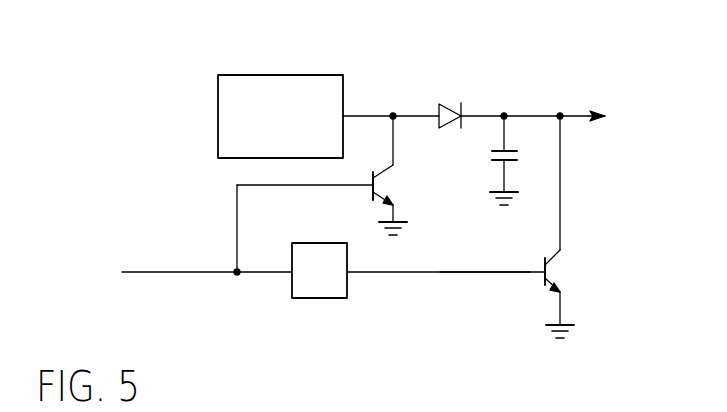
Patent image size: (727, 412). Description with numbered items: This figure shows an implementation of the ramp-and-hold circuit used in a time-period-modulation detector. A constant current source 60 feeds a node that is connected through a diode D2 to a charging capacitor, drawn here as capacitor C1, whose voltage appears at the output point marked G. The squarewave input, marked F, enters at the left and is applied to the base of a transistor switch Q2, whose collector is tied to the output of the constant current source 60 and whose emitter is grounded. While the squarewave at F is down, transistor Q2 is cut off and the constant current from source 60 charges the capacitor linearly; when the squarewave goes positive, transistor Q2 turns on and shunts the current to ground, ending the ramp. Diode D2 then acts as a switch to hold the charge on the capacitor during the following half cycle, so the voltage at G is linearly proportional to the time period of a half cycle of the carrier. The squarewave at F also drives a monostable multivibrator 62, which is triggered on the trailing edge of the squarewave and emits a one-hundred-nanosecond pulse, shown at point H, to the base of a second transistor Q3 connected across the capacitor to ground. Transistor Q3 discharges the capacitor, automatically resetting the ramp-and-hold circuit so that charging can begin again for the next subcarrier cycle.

The constant current source 60 is at (316, 75).
The monostable multivibrator 62 is at (336, 298).
The diode D2 is at (451, 103).
The capacitor C1 is at (488, 160).
The transistor switch Q2 is at (395, 175).
The transistor Q3 is at (565, 227).
The squarewave waveform point F is at (234, 287).
The ramp-and-hold output waveform point G is at (599, 103).
The multivibrator pulse waveform point H is at (485, 256).